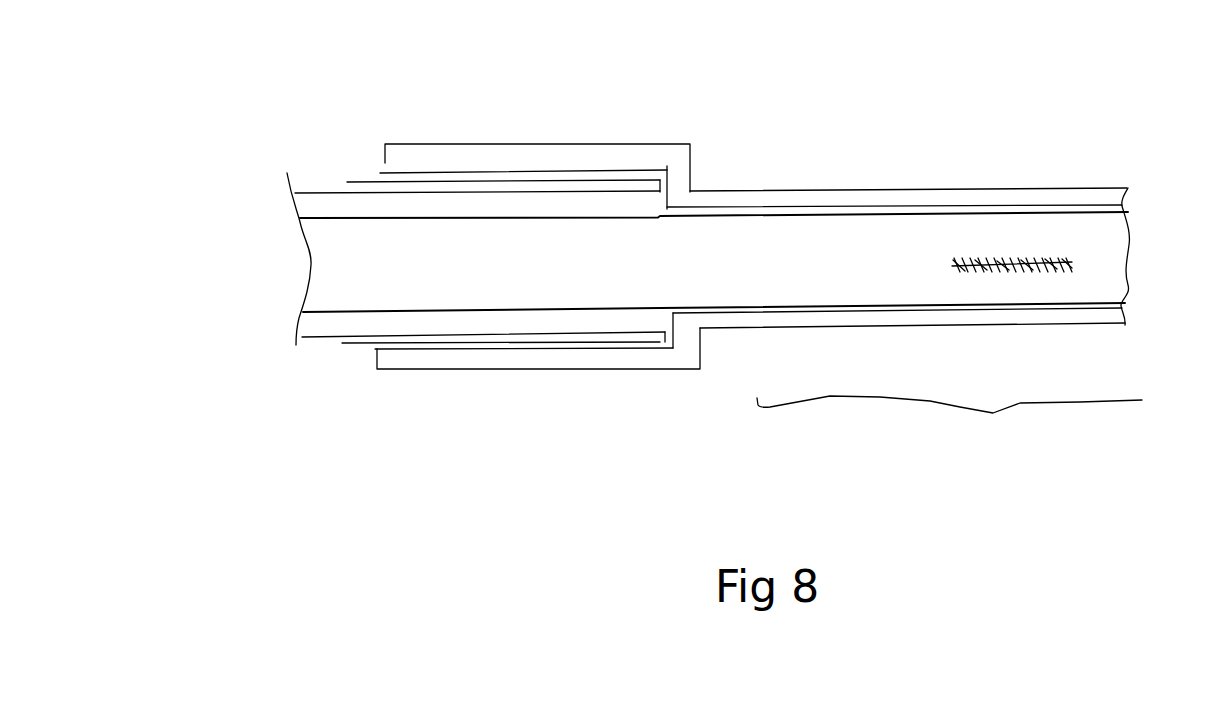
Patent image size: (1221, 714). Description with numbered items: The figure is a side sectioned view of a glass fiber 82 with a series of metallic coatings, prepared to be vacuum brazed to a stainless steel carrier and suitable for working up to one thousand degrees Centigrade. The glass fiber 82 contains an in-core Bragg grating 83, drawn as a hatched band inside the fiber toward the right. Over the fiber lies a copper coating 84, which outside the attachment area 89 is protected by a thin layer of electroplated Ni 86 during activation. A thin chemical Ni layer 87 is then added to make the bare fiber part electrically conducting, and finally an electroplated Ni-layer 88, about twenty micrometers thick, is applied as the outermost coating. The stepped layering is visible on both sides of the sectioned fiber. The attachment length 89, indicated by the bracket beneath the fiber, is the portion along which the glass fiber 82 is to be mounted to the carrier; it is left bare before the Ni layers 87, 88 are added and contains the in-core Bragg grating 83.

The glass fiber core 82 is at (340, 285).
The in-core Bragg grating 83 is at (1025, 258).
The copper coating 84 is at (303, 203).
The electroplated Ni layer 86 is at (345, 183).
The chemical Ni layer 87 is at (374, 173).
The electroplated Ni-layer 88 is at (408, 156).
The attachment area 89 is at (949, 431).